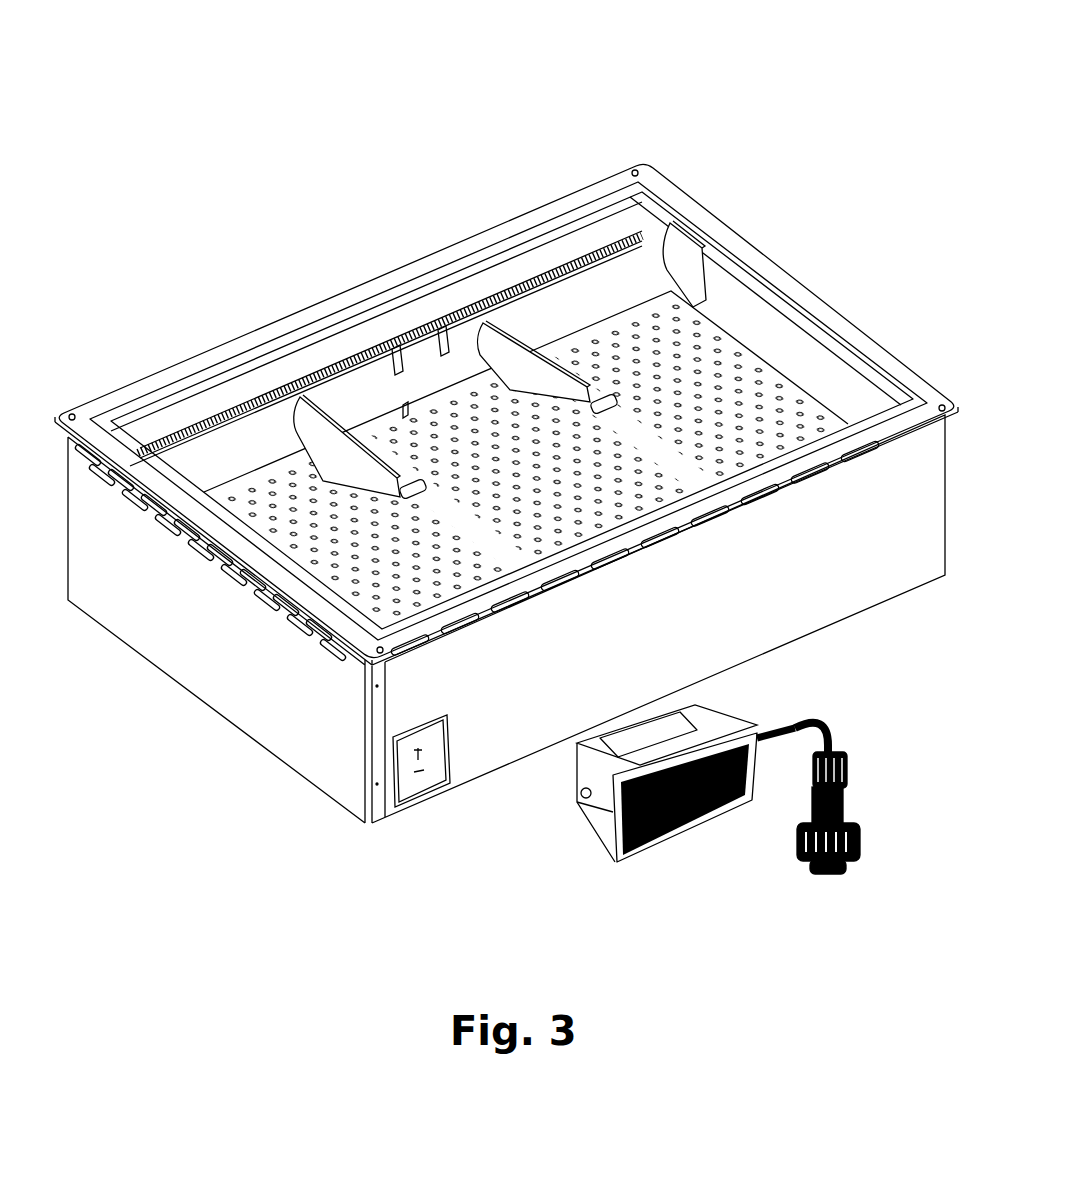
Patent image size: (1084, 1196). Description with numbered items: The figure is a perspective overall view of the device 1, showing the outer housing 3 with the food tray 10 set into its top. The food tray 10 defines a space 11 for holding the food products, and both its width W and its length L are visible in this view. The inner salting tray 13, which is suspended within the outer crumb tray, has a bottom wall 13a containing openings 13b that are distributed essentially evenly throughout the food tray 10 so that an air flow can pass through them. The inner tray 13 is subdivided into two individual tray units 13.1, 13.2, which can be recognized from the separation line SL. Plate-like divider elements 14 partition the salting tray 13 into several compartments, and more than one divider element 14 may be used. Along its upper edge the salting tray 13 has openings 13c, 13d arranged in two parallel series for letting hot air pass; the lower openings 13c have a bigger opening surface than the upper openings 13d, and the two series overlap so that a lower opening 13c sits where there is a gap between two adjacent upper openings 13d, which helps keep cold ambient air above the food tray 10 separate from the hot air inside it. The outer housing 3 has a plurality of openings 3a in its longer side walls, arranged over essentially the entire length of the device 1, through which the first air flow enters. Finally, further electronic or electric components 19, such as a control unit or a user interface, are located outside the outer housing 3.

The device 1 is at (602, 124).
The outer housing 3 is at (238, 754).
The openings 3a is at (335, 628).
The food tray 10 is at (746, 300).
The space 11 is at (502, 409).
The salting tray 13 is at (714, 302).
The tray unit 13.1 is at (460, 355).
The tray unit 13.2 is at (222, 455).
The bottom wall 13a is at (293, 510).
The openings 13b is at (756, 395).
The lower openings 13c is at (418, 343).
The upper openings 13d is at (440, 330).
The divider element 14 is at (338, 435).
The electronic or electric components 19 is at (683, 858).
The length L is at (45, 403).
The width W is at (365, 718).
The separation line SL is at (400, 410).